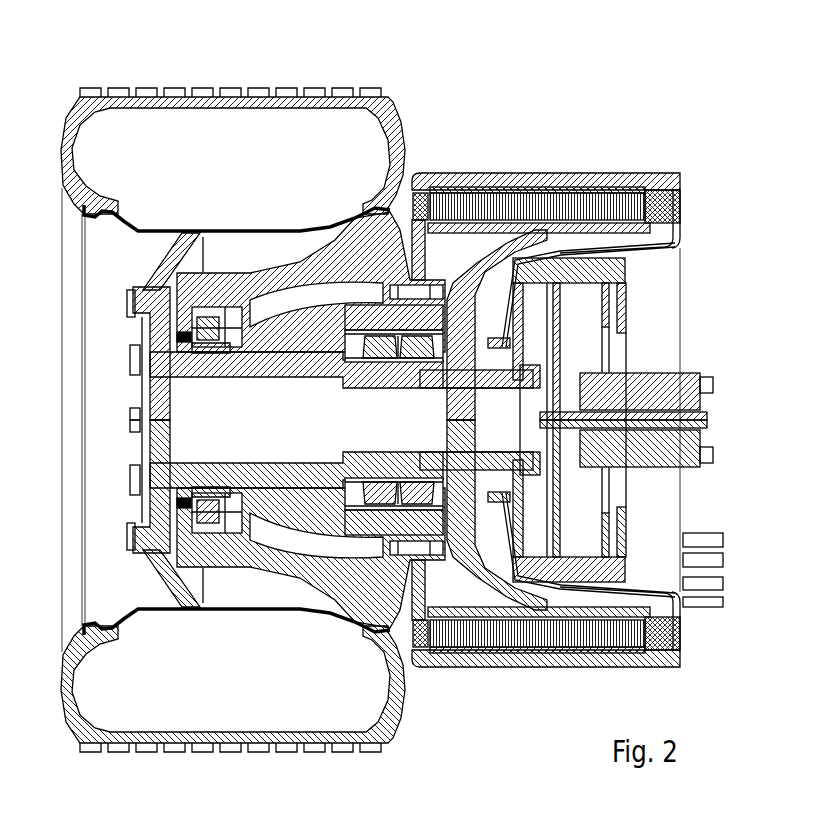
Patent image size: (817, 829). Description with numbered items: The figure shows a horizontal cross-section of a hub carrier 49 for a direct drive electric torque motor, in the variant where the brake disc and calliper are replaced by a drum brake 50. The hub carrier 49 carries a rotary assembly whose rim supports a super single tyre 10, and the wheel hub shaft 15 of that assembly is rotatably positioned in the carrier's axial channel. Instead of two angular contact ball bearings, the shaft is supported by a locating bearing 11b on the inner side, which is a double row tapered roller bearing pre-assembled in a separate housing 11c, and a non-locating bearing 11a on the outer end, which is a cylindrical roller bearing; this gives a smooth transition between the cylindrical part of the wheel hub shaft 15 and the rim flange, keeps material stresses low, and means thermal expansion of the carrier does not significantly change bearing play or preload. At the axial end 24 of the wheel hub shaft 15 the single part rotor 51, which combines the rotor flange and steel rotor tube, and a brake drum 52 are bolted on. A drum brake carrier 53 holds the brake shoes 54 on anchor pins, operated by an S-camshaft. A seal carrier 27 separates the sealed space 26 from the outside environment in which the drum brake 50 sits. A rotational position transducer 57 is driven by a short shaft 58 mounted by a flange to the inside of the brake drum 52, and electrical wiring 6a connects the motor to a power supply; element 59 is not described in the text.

The super single tyre 10 is at (182, 98).
The wheel hub shaft 15 is at (155, 322).
The non-locating bearing 11a is at (213, 327).
The locating bearing 11b is at (373, 343).
The separate housing 11c is at (415, 313).
The sealed space 26 is at (442, 250).
The single part rotor 51 is at (468, 280).
The seal carrier 27 is at (503, 297).
The hub carrier 49 is at (567, 177).
The brake drum 52 is at (617, 263).
The drum brake 50 is at (630, 305).
The axial end 24 is at (450, 370).
The short shaft 58 is at (637, 413).
The rotational position transducer 57 is at (695, 420).
The drum brake carrier 53 is at (650, 467).
The brake shoes 54 is at (617, 563).
The electrical wiring 6a is at (710, 583).
The housing bottom 59 is at (697, 650).